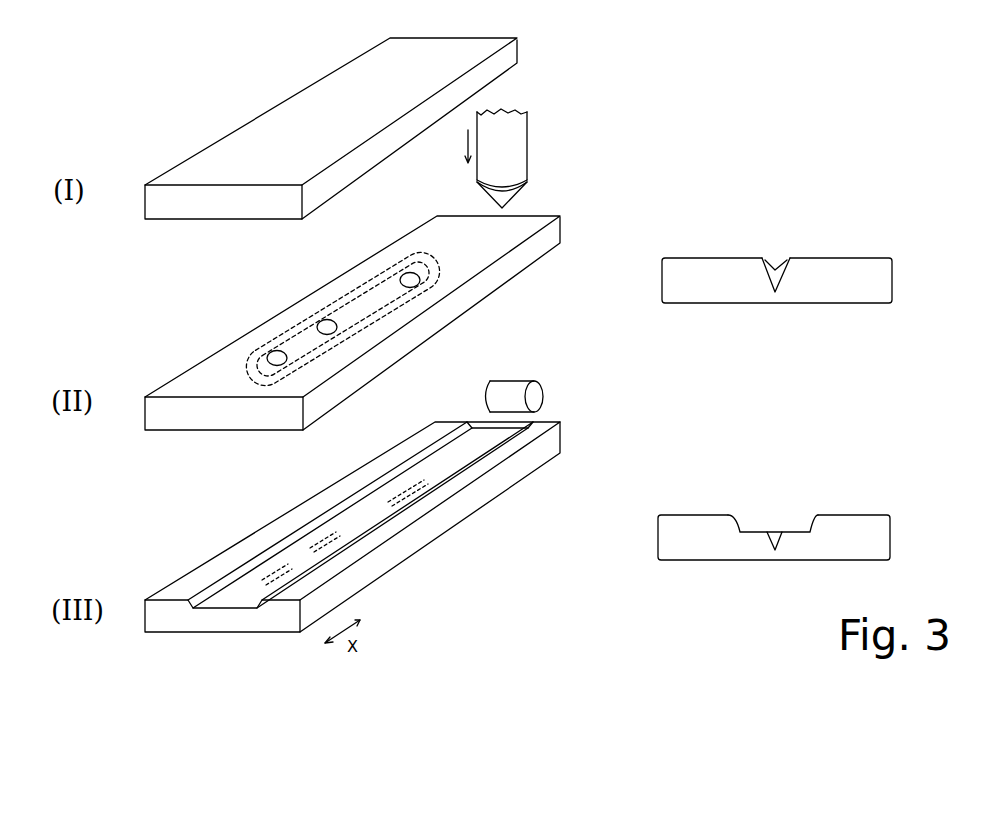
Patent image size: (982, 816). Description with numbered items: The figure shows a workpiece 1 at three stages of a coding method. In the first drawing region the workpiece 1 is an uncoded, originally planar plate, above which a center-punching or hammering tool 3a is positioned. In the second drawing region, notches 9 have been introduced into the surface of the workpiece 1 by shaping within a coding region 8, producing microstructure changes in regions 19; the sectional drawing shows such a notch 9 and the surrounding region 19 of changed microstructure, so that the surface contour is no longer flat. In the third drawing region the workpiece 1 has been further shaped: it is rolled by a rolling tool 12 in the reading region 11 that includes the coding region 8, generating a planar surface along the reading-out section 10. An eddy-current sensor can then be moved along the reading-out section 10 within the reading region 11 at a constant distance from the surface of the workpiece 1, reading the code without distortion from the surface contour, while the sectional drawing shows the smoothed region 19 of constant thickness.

The workpiece 1 is at (233, 152).
The center-punching or hammering tool 3a is at (515, 138).
The coding region 8 is at (435, 279).
The notches 9 is at (287, 360).
The reading-out section 10 is at (380, 505).
The reading region 11 is at (422, 290).
The rolling tool 12 is at (513, 390).
The regions 19 is at (767, 280).